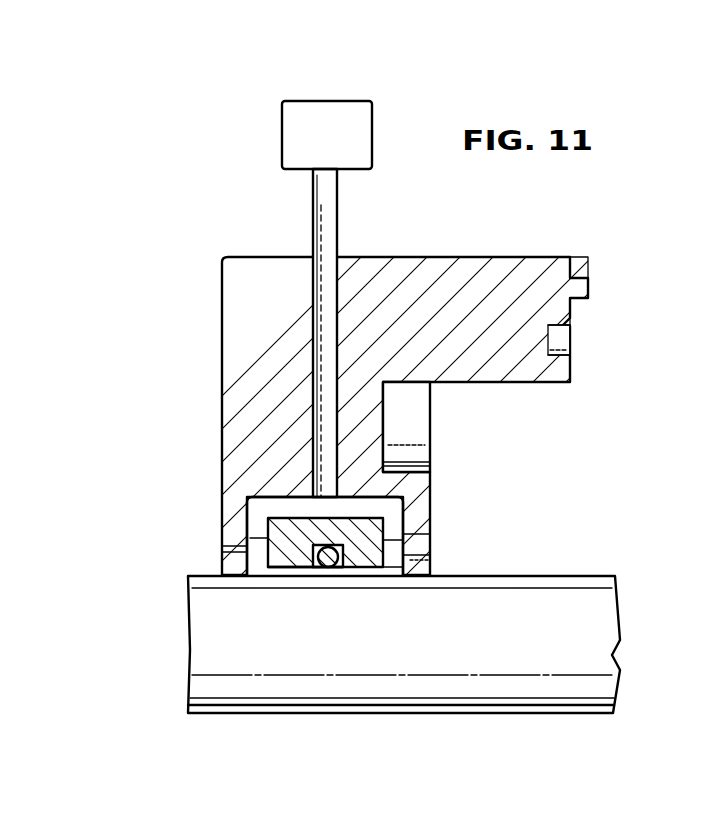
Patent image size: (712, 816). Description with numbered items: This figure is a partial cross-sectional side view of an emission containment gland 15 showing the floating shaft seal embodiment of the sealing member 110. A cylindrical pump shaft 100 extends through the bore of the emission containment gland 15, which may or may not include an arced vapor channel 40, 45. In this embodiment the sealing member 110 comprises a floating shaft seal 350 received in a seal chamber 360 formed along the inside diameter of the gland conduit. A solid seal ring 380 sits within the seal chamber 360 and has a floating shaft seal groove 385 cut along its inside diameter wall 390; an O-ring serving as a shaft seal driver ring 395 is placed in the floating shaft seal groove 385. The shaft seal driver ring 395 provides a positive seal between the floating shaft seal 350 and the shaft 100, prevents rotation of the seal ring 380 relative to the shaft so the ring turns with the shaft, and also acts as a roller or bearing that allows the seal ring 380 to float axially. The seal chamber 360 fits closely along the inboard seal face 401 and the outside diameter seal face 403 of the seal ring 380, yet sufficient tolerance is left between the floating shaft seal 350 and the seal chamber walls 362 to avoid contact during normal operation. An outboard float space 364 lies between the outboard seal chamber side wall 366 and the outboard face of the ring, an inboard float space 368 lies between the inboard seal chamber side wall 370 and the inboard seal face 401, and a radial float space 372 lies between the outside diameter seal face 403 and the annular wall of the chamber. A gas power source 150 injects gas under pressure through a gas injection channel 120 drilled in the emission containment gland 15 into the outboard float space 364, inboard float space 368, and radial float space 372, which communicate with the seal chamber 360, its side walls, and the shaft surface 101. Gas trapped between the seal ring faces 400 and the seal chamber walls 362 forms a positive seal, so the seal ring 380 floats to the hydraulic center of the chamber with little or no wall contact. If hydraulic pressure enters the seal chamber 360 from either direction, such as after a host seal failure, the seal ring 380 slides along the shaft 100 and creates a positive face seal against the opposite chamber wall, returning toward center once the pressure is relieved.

The emission containment gland 15 is at (417, 281).
The arced vapor channel 40 is at (547, 405).
The arced vapor channel 45 is at (559, 340).
The pump shaft 100 is at (547, 622).
The shaft surface 101 is at (373, 714).
The sealing member 110 is at (282, 586).
The gas injection channel 120 is at (324, 262).
The gas power source 150 is at (352, 117).
The floating shaft seal 350 is at (392, 552).
The seal chamber 360 is at (331, 508).
The seal chamber walls 362 is at (298, 498).
The outboard float space 364 is at (250, 565).
The outboard seal chamber side wall 366 is at (248, 532).
The inboard float space 368 is at (392, 552).
The inboard seal chamber side wall 370 is at (431, 538).
The radial float space 372 is at (390, 447).
The solid seal ring 380 is at (262, 563).
The floating shaft seal groove 385 is at (320, 572).
The inside diameter wall 390 is at (378, 578).
The shaft seal driver ring 395 is at (336, 574).
The seal ring faces 400 is at (252, 497).
The inboard seal face 401 is at (431, 518).
The outside diameter seal face 403 is at (432, 450).